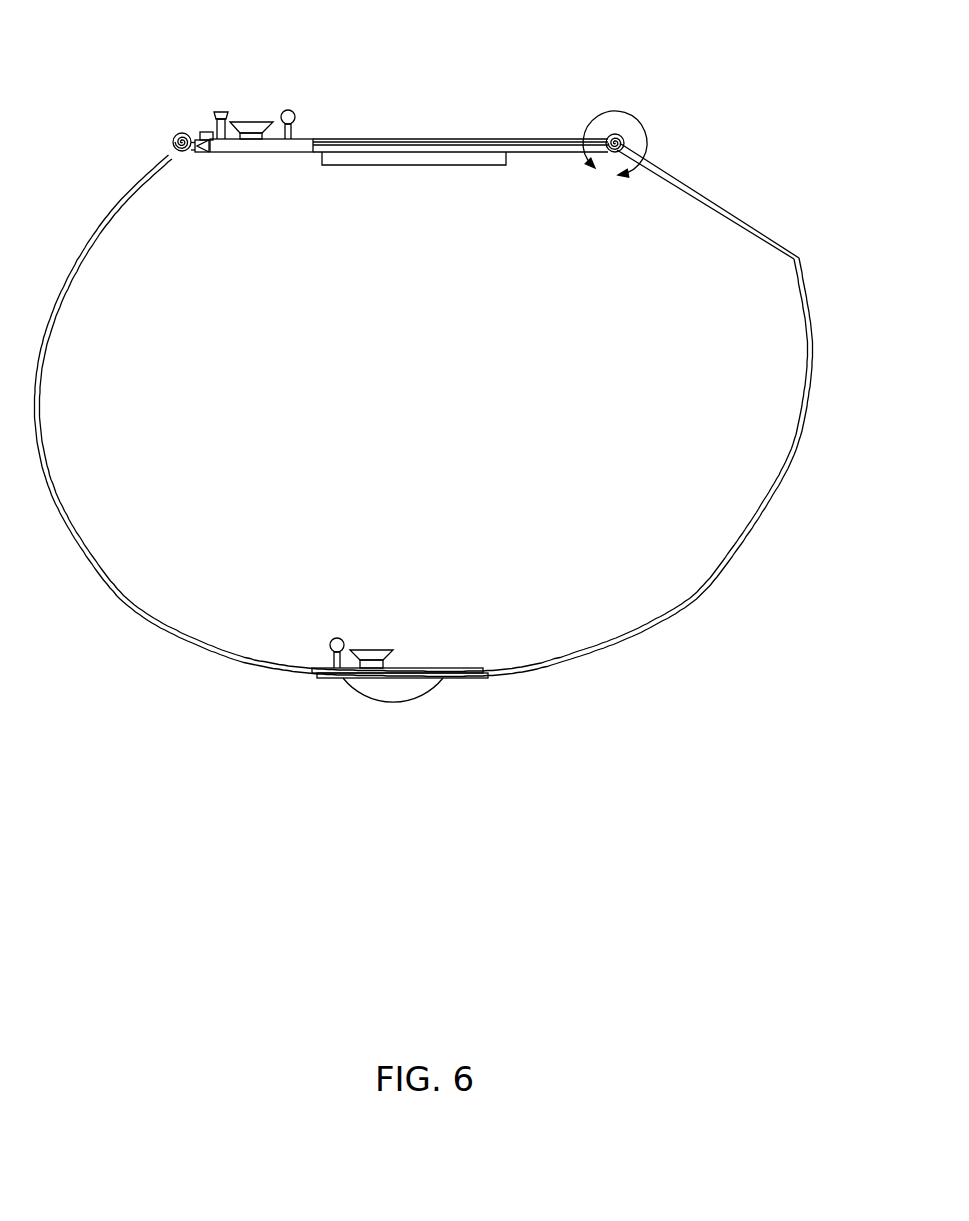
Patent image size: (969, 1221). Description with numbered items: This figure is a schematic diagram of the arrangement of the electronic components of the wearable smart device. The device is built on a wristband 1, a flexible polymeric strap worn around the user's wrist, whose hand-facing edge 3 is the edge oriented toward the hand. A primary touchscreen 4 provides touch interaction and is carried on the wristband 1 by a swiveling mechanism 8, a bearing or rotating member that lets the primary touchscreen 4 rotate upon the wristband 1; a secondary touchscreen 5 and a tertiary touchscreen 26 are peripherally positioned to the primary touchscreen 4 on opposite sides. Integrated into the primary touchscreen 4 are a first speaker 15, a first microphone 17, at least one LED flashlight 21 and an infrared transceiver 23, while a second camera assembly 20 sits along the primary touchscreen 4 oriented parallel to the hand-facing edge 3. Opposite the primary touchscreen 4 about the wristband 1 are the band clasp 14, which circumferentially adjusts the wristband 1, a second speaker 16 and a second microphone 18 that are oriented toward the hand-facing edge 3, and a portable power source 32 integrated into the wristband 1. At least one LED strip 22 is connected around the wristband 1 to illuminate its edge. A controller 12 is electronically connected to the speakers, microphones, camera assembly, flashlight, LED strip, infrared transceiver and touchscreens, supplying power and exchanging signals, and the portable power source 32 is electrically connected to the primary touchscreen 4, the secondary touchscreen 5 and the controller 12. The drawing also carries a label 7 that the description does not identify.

The wristband 1 is at (787, 470).
The LED strip 22 is at (753, 538).
The tertiary touchscreen 26 is at (176, 135).
The infrared transceiver 23 is at (197, 132).
The second camera assembly 20 is at (303, 152).
The LED flashlight 21 is at (215, 152).
The first speaker 15 is at (257, 125).
The first microphone 17 is at (296, 116).
The primary touchscreen 4 is at (538, 139).
The swiveling mechanism 8 is at (400, 148).
The hand-facing edge 3 is at (557, 152).
The controller 12 is at (495, 165).
The secondary touchscreen 5 is at (619, 136).
The rotation direction 7 is at (615, 157).
The band clasp 14 is at (444, 644).
The portable power source 32 is at (393, 692).
The second microphone 18 is at (333, 644).
The second speaker 16 is at (373, 655).